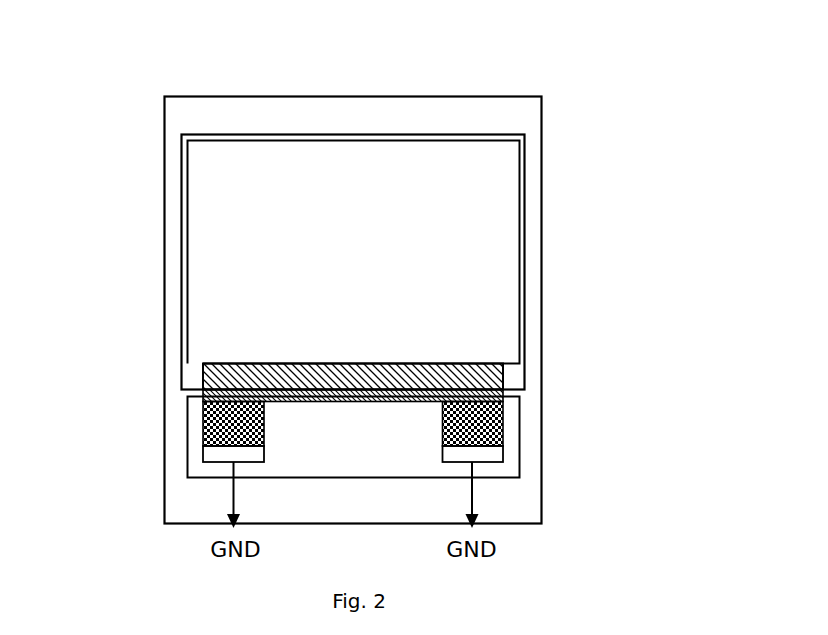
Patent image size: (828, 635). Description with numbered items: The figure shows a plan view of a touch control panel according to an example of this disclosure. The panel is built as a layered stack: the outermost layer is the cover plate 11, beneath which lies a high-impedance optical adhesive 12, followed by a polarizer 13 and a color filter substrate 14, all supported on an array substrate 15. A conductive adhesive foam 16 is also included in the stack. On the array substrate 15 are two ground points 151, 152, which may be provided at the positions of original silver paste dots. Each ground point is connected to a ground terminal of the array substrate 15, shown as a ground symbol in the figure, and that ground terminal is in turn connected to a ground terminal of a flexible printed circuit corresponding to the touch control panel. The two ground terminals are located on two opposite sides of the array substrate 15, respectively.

The cover plate 11 is at (542, 180).
The high-impedance optical adhesive 12 is at (524, 260).
The polarizer 13 is at (520, 310).
The color filter substrate 14 is at (505, 391).
The array substrate 15 is at (520, 438).
The conductive adhesive foam 16 is at (205, 372).
The ground point 151 is at (203, 452).
The ground point 152 is at (503, 462).